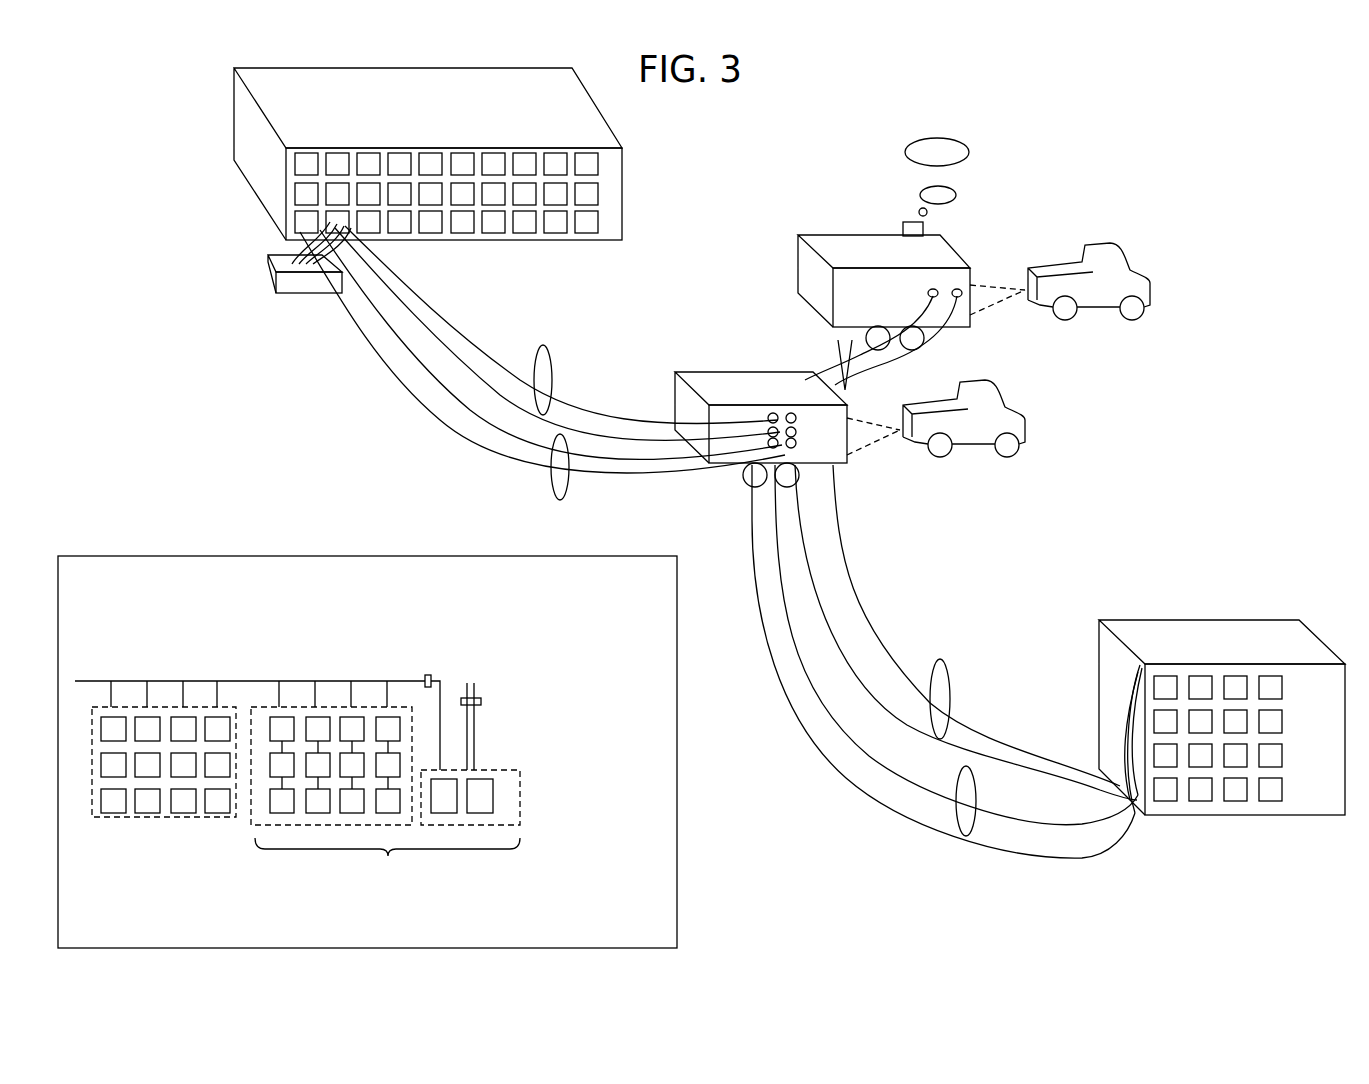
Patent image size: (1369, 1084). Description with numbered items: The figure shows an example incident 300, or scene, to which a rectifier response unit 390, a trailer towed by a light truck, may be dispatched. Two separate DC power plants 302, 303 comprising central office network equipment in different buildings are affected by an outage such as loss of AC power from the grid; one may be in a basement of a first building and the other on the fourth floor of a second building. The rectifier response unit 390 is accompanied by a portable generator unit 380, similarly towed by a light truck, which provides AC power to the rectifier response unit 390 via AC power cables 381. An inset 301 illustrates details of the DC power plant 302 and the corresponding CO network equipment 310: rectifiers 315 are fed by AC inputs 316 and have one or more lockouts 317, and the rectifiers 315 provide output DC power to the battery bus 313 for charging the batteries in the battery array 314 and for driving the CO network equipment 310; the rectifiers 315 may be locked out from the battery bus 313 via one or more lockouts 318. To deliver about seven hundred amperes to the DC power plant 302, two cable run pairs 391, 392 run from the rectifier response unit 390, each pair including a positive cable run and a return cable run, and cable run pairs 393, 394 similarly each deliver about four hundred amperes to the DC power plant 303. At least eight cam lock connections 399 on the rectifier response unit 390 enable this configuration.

The incident 300 is at (113, 94).
The inset 301 is at (641, 587).
The DC power plant 302 is at (303, 297).
The DC power plant 303 is at (1135, 668).
The central office (CO) network equipment 310 is at (164, 817).
The battery bus 313 is at (298, 681).
The battery array 314 is at (270, 705).
The rectifiers 315 is at (520, 808).
The AC inputs 316 is at (472, 683).
The lockout(s) 317 is at (482, 701).
The lockout(s) 318 is at (429, 679).
The portable generator unit 380 is at (870, 234).
The AC power cables 381 is at (837, 340).
The rectifier response unit 390 is at (755, 372).
The cable run pair 391 is at (553, 345).
The cable run pair 392 is at (557, 497).
The cable run pair 393 is at (940, 660).
The cable run pair 394 is at (966, 838).
The cam lock connections 399 is at (822, 441).